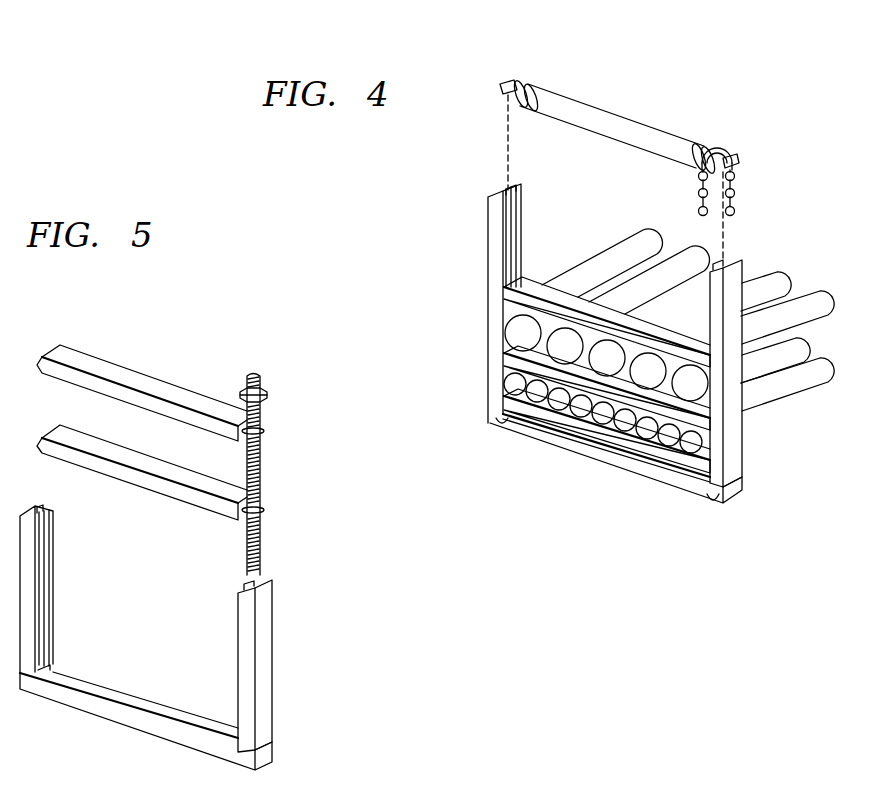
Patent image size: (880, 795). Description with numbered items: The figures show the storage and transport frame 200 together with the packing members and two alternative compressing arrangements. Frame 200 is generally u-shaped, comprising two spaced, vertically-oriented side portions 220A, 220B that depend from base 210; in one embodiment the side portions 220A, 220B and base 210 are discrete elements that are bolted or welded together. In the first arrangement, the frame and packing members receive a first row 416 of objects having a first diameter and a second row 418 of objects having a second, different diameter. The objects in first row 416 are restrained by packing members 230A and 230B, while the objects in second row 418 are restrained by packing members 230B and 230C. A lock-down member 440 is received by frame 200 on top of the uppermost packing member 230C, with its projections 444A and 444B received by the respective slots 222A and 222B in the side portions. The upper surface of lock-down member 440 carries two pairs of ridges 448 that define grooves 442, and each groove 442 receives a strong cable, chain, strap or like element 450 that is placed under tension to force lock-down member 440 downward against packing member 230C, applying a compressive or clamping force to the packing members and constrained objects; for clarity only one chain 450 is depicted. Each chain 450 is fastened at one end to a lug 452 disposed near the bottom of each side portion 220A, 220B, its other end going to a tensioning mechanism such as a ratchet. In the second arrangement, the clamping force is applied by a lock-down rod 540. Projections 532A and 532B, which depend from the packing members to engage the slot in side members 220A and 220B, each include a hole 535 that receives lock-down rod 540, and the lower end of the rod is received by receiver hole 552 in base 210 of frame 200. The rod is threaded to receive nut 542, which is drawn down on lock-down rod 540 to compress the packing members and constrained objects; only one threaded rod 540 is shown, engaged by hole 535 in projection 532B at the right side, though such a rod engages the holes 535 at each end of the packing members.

In FIG. 4, the storage and transport frame 200 is at (436, 155).
In FIG. 5, the storage and transport frame 200 is at (172, 318).
In FIG. 4, the base 210 is at (652, 458).
In FIG. 5, the base 210 is at (193, 720).
In FIG. 4, the side portion 220A is at (492, 231).
In FIG. 5, the side portion 220A is at (27, 624).
In FIG. 4, the side portion 220B is at (740, 432).
In FIG. 5, the side portion 220B is at (263, 700).
In FIG. 4, the slot 222A is at (519, 192).
In FIG. 4, the slot 222B is at (726, 262).
In FIG. 4, the packing member 230A is at (512, 404).
In FIG. 4, the packing member 230B is at (520, 356).
In FIG. 4, the packing member 230C is at (545, 288).
In FIG. 4, the first row of objects 416 is at (561, 406).
In FIG. 4, the second row of objects 418 is at (520, 333).
In FIG. 4, the lock-down member 440 is at (612, 113).
In FIG. 4, the groove 442 is at (531, 80).
In FIG. 4, the projection 444A is at (503, 84).
In FIG. 4, the projection 444B is at (740, 161).
In FIG. 4, the ridges 448 is at (713, 147).
In FIG. 4, the chain 450 is at (738, 192).
In FIG. 4, the lug 452 is at (497, 428).
In FIG. 5, the projection 532A is at (38, 360).
In FIG. 5, the projection 532B is at (263, 450).
In FIG. 5, the hole 535 is at (265, 431).
In FIG. 5, the lock-down rod 540 is at (262, 538).
In FIG. 5, the nut 542 is at (268, 393).
In FIG. 5, the receiver hole 552 is at (57, 668).